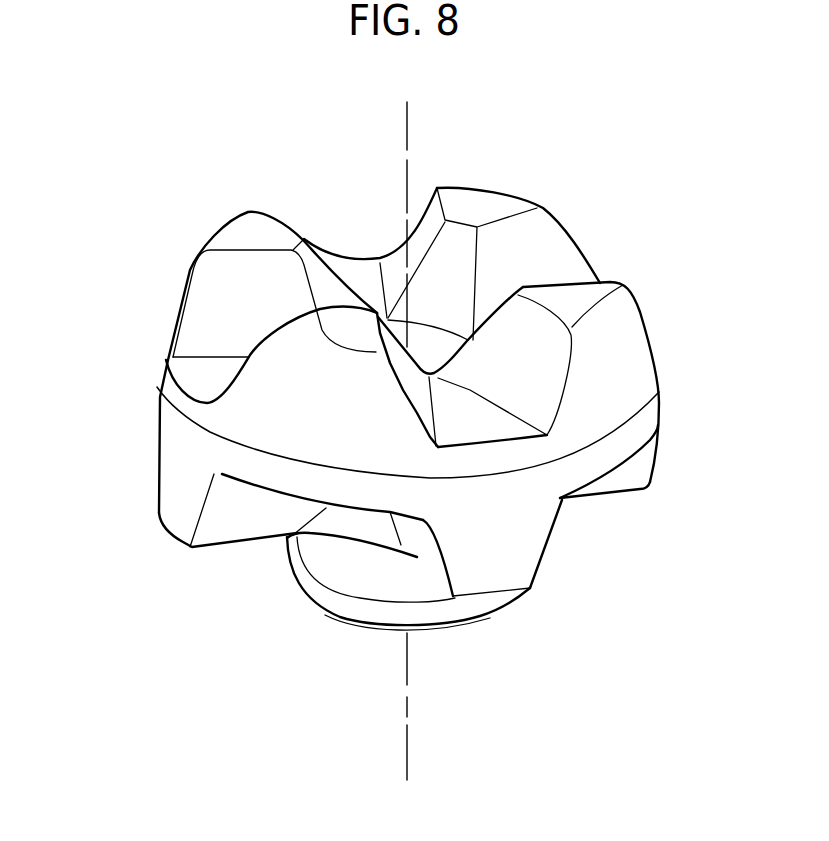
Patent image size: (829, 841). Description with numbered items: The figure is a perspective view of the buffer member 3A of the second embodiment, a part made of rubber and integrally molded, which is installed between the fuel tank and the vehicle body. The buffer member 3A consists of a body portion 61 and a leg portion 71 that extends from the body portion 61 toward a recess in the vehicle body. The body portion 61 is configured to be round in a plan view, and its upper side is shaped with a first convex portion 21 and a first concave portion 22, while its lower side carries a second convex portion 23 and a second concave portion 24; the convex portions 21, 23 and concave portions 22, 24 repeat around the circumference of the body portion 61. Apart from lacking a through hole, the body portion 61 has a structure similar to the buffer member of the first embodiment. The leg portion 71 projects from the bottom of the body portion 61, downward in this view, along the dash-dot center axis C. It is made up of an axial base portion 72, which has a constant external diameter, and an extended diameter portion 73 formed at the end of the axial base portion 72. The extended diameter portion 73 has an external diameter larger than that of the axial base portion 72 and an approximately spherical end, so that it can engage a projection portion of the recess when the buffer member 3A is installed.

The buffer member 3A is at (172, 186).
The first convex portion 21 is at (259, 236).
The first concave portion 22 is at (366, 283).
The second convex portion 23 is at (177, 541).
The second concave portion 24 is at (598, 491).
The body portion 61 is at (128, 314).
The leg portion 71 is at (493, 635).
The axial base portion 72 is at (343, 553).
The extended diameter portion 73 is at (334, 600).
The center axis C is at (405, 738).